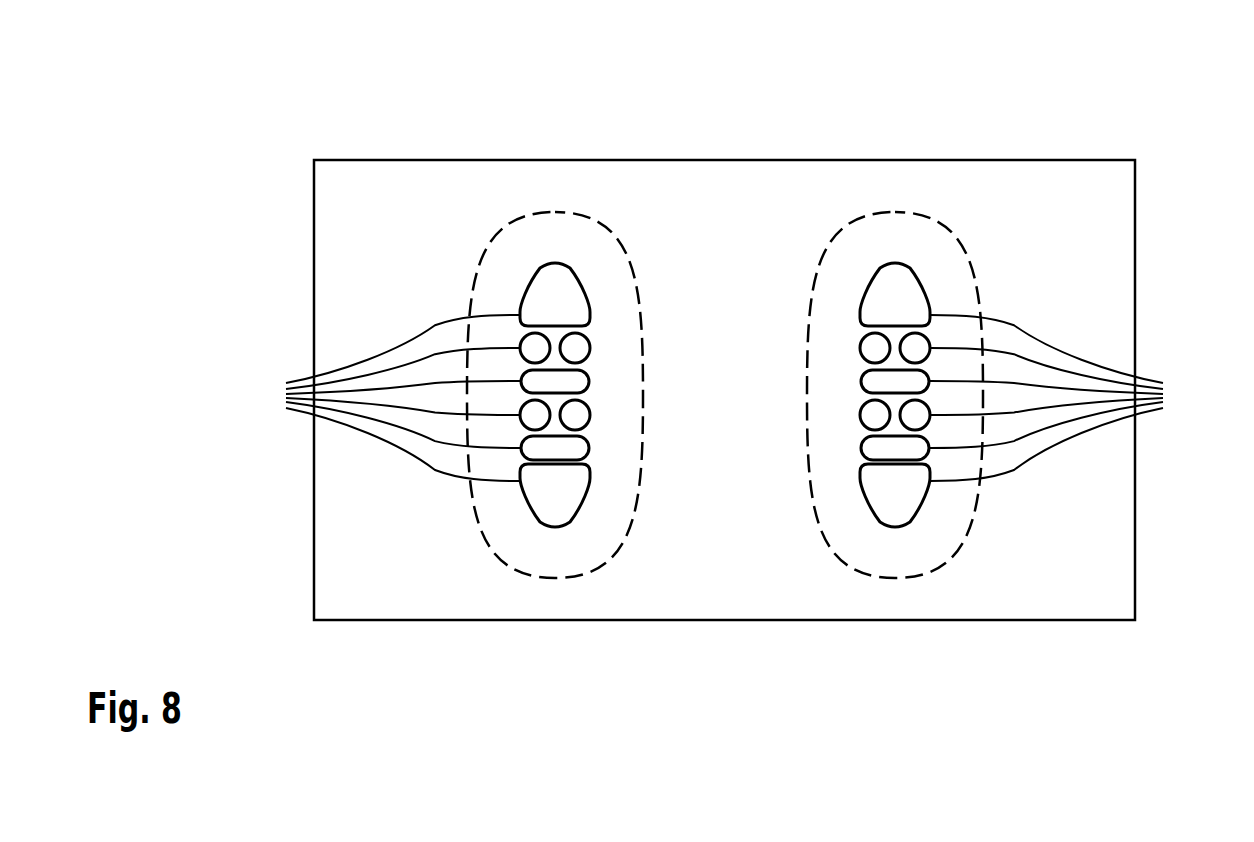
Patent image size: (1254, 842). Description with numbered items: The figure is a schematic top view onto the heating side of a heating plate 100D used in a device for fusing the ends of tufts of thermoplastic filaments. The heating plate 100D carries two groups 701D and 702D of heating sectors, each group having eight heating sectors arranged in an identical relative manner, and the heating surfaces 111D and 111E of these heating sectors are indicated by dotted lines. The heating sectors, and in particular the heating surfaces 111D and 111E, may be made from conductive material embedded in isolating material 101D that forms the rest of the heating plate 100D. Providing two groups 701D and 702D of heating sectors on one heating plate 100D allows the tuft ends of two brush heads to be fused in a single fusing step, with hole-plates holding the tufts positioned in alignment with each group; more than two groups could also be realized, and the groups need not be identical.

The heating plate 100D is at (1114, 128).
The isolating material 101D is at (1108, 542).
The heating surfaces 111D is at (374, 398).
The heating surfaces 111E is at (1075, 398).
The group of heating sectors 701D is at (578, 578).
The group of heating sectors 702D is at (917, 578).